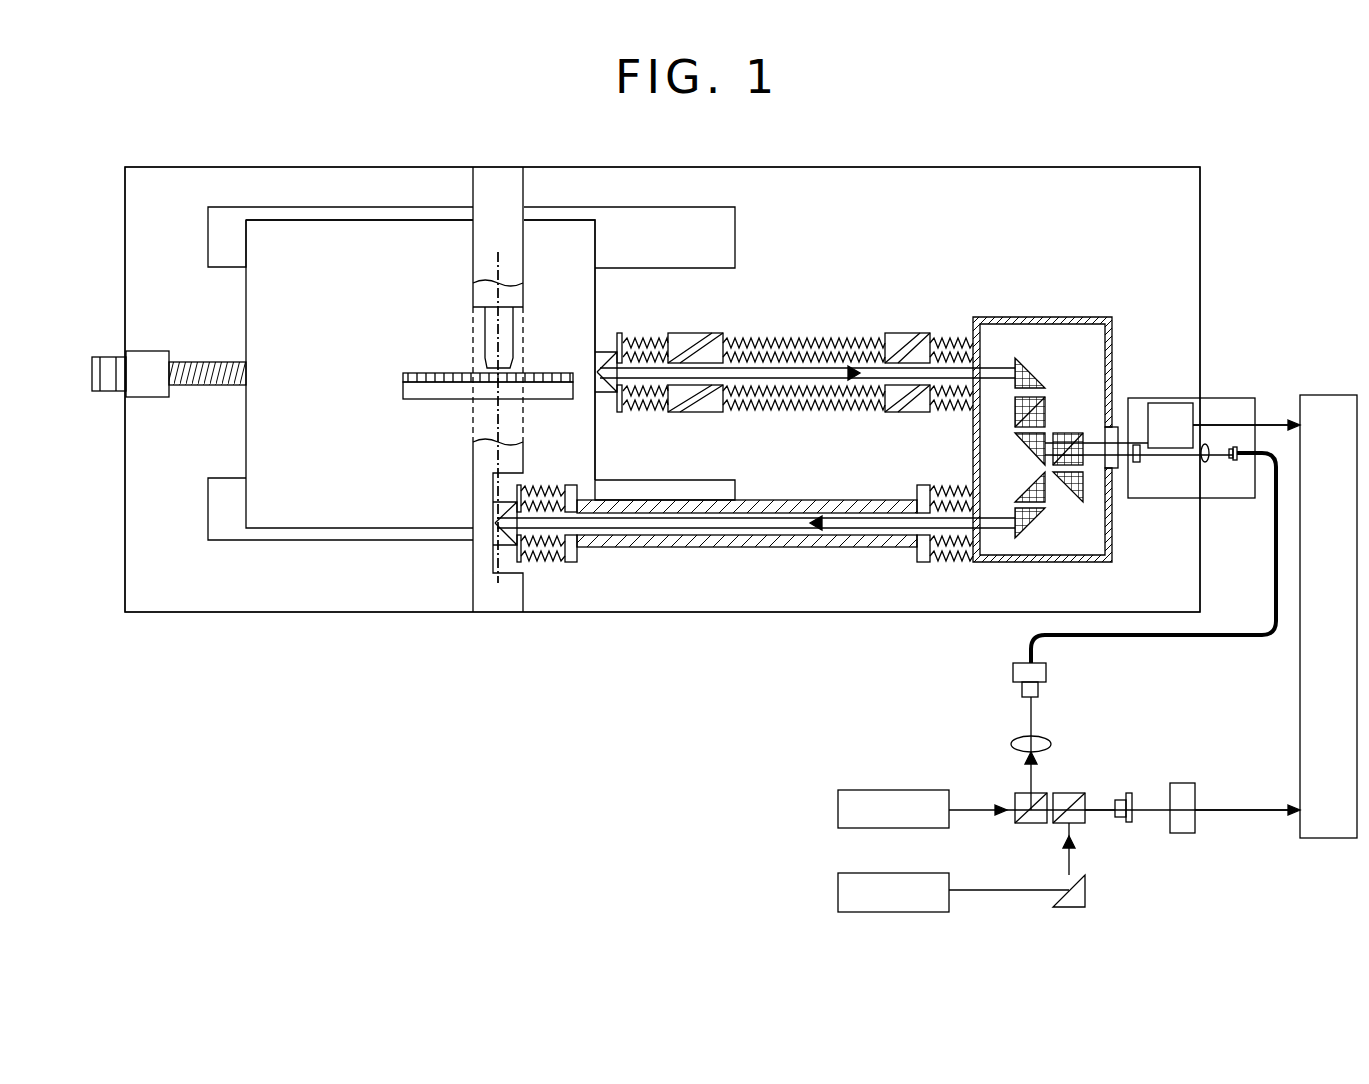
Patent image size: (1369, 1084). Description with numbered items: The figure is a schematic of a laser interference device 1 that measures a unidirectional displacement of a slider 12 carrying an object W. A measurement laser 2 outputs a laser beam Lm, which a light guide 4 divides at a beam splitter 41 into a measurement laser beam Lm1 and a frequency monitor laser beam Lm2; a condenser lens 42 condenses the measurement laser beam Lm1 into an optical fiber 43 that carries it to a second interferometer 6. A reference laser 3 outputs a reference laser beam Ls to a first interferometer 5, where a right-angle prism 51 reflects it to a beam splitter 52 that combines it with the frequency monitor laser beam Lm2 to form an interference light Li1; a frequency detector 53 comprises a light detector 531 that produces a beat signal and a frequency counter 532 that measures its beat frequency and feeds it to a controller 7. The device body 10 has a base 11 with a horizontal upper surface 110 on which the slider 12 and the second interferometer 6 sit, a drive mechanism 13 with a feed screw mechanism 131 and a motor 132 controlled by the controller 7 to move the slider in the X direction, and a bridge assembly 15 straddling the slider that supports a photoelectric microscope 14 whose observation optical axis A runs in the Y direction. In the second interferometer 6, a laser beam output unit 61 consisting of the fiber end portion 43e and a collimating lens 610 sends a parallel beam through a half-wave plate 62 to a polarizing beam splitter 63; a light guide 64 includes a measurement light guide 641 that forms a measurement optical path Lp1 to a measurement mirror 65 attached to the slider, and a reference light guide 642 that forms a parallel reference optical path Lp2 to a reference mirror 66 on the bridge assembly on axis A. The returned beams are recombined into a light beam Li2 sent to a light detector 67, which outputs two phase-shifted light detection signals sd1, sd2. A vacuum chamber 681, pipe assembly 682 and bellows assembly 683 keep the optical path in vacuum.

The laser interference device 1 is at (85, 152).
The device body 10 is at (457, 358).
The base 11 is at (765, 167).
The upper surface 110 is at (660, 185).
The slider 12 is at (321, 220).
The drive mechanism 13 is at (159, 369).
The feed screw mechanism 131 is at (193, 387).
The motor 132 is at (100, 393).
The photoelectric microscope 14 is at (485, 328).
The bridge assembly 15 is at (500, 180).
The object W is at (403, 374).
The observation optical axis A is at (520, 437).
The measurement mirror 65 is at (606, 352).
The reference mirror 66 is at (503, 548).
The bellows assembly 683 is at (772, 350).
The pipe assembly 682 is at (778, 498).
The vacuum chamber 681 is at (1035, 316).
The second interferometer 6 is at (1095, 414).
The light guide 64 is at (1042, 438).
The measurement light guide 641 is at (1012, 358).
The reference light guide 642 is at (1040, 528).
The polarizing beam splitter 63 is at (1065, 432).
The light detector 67 is at (1178, 403).
The half-wave plate 62 is at (1137, 463).
The laser beam output unit 61 is at (1249, 361).
The collimating lens 610 is at (1205, 445).
The end portion 43e is at (1235, 450).
The optical fiber 43 is at (1135, 640).
The controller 7 is at (1350, 395).
The light guide 4 is at (991, 740).
The beam splitter 41 is at (1022, 792).
The condenser lens 42 is at (1042, 740).
The measurement laser 2 is at (858, 790).
The reference laser 3 is at (862, 873).
The first interferometer 5 is at (1149, 817).
The right-angle prism 51 is at (1085, 893).
The beam splitter 52 is at (1085, 820).
The frequency detector 53 is at (1180, 761).
The light detector 531 is at (1130, 795).
The frequency counter 532 is at (1182, 790).
The laser beam Lm is at (972, 810).
The measurement laser beam Lm1 is at (1034, 777).
The frequency monitor laser beam Lm2 is at (1050, 823).
The reference laser beam Ls is at (972, 890).
The interference light Li1 is at (1095, 805).
The light beam Li2 is at (1095, 443).
The measurement optical path Lp1 is at (854, 367).
The reference optical path Lp2 is at (812, 528).
The light detection signal sd1 is at (1282, 425).
The light detection signal sd2 is at (1268, 390).